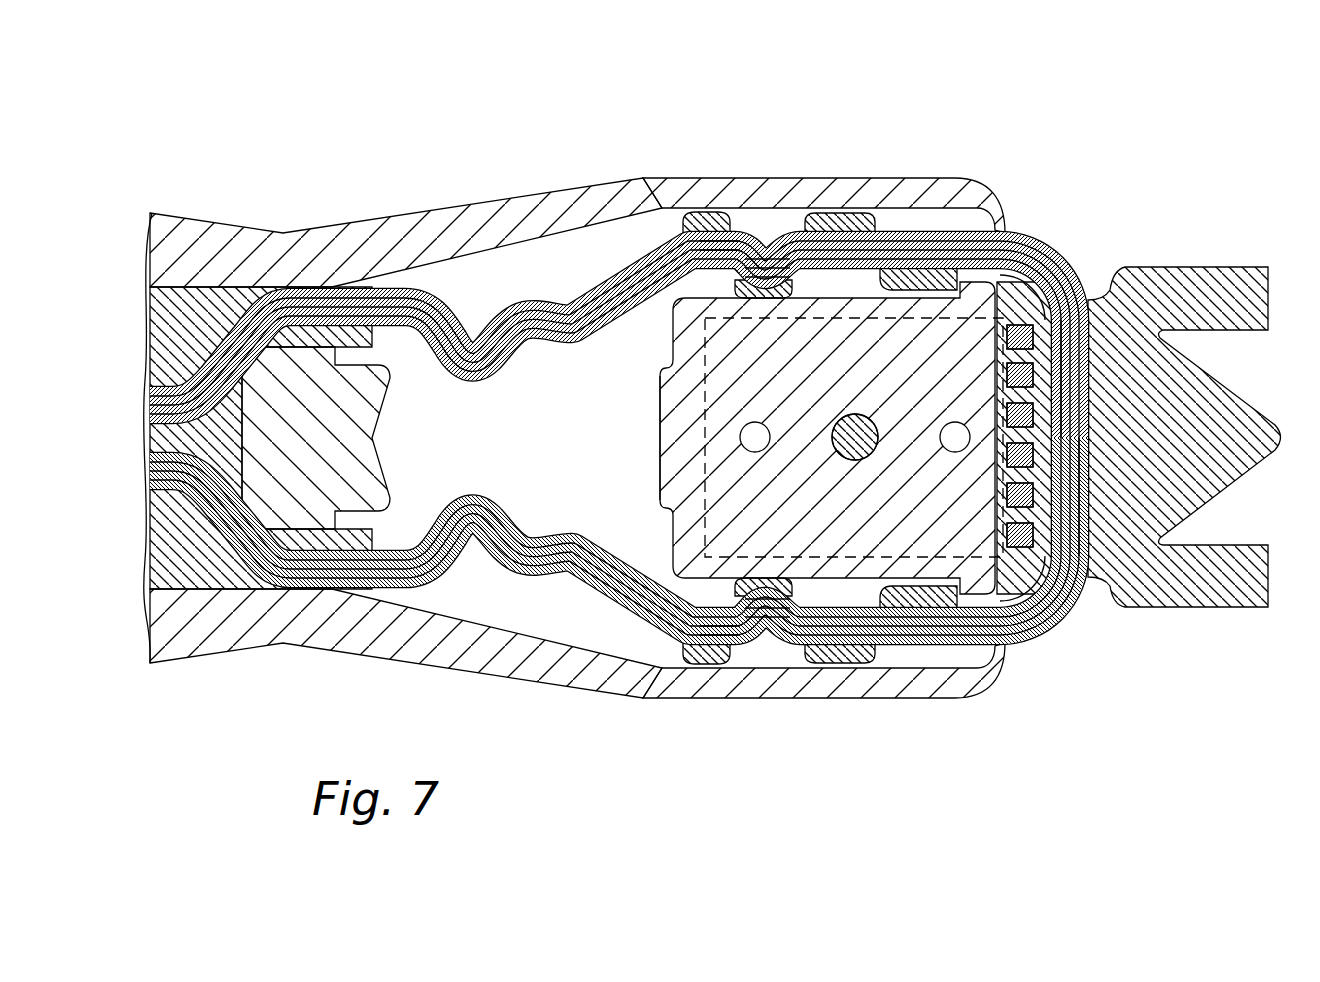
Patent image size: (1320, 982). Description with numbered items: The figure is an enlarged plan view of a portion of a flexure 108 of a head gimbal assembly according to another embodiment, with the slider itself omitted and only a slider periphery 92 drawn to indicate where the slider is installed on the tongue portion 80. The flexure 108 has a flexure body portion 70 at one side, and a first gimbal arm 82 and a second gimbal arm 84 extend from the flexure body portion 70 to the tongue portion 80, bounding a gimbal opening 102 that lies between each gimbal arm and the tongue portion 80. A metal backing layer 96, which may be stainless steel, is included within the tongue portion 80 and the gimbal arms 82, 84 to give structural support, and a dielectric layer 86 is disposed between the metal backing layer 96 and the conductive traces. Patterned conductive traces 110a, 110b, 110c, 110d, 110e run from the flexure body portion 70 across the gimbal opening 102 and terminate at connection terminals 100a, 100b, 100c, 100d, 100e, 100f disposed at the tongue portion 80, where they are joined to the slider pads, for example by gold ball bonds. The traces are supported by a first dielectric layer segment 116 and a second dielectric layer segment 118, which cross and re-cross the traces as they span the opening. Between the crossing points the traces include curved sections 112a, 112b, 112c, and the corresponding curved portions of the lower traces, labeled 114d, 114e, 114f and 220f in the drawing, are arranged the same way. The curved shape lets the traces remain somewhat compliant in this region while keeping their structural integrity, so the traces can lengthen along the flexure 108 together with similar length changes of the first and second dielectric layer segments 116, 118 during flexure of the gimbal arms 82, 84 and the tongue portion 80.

The flexure 108 is at (315, 145).
The dielectric layer 86 is at (180, 310).
The flexure body portion 70 is at (253, 233).
The first gimbal arm 82 is at (910, 182).
The second gimbal arm 84 is at (917, 697).
The tongue portion 80 is at (660, 412).
The metal backing layer 96 is at (660, 442).
The slider periphery 92 is at (702, 497).
The gimbal opening 102 is at (820, 272).
The patterned conductive trace 110a is at (722, 225).
The patterned conductive trace 110b is at (720, 250).
The patterned conductive trace 110c is at (723, 260).
The patterned conductive trace 110d is at (693, 642).
The patterned conductive trace 110e is at (708, 628).
The curved section 112a is at (765, 258).
The curved section 112b is at (770, 262).
The curved section 112c is at (785, 270).
The fourth interlayer 114d is at (780, 618).
The fifth interlayer 114e is at (773, 624).
The sixth interlayer 114f is at (767, 632).
The layer 220f is at (722, 625).
The first dielectric layer segment 116 is at (843, 222).
The second dielectric layer segment 118 is at (848, 658).
The connection terminal 100a is at (1050, 300).
The connection terminal 100b is at (1070, 343).
The connection terminal 100c is at (1033, 405).
The connection terminal 100d is at (1025, 452).
The connection terminal 100e is at (1160, 580).
The connection terminal 100f is at (1073, 607).